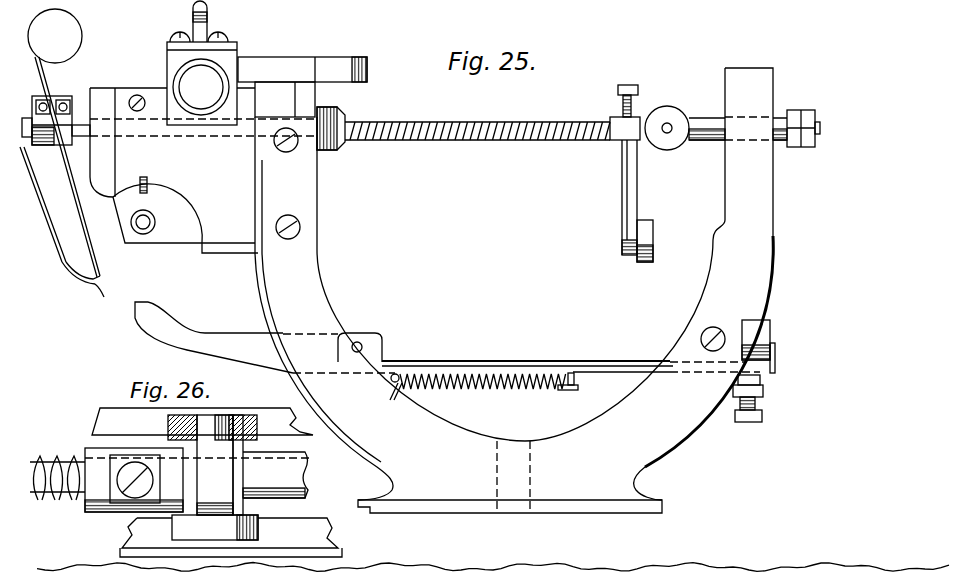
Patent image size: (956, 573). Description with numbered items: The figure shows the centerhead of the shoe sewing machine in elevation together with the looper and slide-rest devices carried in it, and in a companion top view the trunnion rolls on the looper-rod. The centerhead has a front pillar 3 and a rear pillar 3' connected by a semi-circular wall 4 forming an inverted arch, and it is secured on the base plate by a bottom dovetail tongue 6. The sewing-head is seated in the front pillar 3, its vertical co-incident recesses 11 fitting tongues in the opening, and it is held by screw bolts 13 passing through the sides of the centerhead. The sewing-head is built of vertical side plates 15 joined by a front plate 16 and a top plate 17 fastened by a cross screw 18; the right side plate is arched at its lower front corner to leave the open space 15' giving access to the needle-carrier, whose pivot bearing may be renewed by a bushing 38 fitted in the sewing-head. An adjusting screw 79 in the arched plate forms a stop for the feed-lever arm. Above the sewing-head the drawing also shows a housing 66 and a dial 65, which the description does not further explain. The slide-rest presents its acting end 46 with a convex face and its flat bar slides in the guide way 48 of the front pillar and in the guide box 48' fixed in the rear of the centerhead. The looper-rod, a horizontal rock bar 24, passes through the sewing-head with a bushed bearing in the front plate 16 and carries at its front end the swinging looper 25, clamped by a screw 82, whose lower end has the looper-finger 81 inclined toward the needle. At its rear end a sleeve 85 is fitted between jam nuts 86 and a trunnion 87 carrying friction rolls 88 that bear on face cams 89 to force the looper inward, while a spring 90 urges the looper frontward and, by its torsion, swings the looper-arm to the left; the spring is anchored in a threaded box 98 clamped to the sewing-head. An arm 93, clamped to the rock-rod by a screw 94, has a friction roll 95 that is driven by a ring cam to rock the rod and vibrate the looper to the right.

In FIG. 25, the front pillar 3 is at (324, 308).
In FIG. 25, the rear pillar 3' is at (704, 284).
In FIG. 25, the semi-circular wall 4 is at (531, 442).
In FIG. 25, the bottom dovetail tongue 6 is at (510, 484).
In FIG. 25, the vertical co-incident recesses 11 is at (285, 99).
In FIG. 25, the screw bolts 13 is at (285, 152).
In FIG. 25, the vertical side plates 15 is at (203, 177).
In FIG. 25, the open space 15' is at (166, 213).
In FIG. 25, the front plate 16 is at (128, 142).
In FIG. 25, the top plate 17 is at (308, 57).
In FIG. 25, the cross screw 18 is at (135, 96).
In FIG. 25, the rock bar 24 is at (82, 118).
In FIG. 26, the rock bar 24 is at (287, 475).
In FIG. 25, the looper 25 is at (50, 200).
In FIG. 25, the bushing 38 is at (150, 222).
In FIG. 25, the acting end of slide-rest 46 is at (199, 337).
In FIG. 25, the guide way 48 is at (506, 366).
In FIG. 25, the guide box 48' is at (766, 371).
In FIG. 25, the dial 65 is at (201, 87).
In FIG. 25, the housing 66 is at (202, 63).
In FIG. 25, the adjusting screw 79 is at (140, 192).
In FIG. 25, the looper-finger 81 is at (82, 270).
In FIG. 25, the screw 82 is at (47, 111).
In FIG. 25, the sleeve 85 is at (707, 118).
In FIG. 25, the jam nuts 86 is at (796, 120).
In FIG. 26, the trunnion 87 is at (220, 465).
In FIG. 25, the friction rolls 88 is at (667, 107).
In FIG. 26, the friction rolls 88 is at (224, 477).
In FIG. 26, the face cams 89 is at (217, 482).
In FIG. 25, the spring 90 is at (456, 121).
In FIG. 26, the spring 90 is at (57, 490).
In FIG. 25, the arm 93 is at (613, 186).
In FIG. 25, the screw 94 is at (624, 86).
In FIG. 26, the screw 94 is at (135, 479).
In FIG. 25, the friction roll 95 is at (639, 253).
In FIG. 25, the threaded box 98 is at (330, 150).